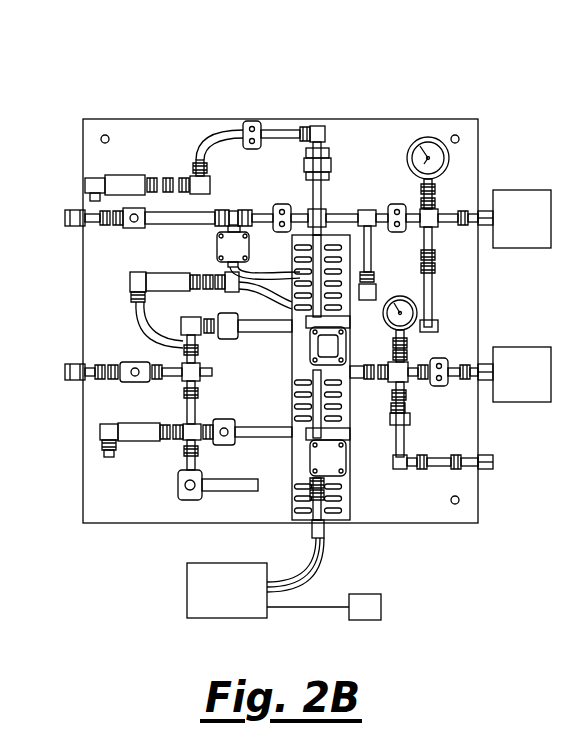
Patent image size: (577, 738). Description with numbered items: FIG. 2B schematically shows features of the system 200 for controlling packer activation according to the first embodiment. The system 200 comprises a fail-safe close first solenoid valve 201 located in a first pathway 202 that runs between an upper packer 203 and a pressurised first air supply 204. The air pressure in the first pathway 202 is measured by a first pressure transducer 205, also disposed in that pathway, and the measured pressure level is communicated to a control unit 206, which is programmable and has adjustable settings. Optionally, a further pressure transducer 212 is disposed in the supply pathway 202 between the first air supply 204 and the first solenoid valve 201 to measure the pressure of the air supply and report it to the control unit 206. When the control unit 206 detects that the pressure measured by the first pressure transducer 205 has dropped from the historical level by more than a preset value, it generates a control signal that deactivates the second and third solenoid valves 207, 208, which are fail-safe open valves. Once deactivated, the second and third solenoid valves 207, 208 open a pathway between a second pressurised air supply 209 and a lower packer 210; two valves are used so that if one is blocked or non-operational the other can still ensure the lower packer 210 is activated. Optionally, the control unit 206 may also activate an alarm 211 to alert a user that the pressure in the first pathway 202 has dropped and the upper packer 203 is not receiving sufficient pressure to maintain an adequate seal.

The system 200 is at (428, 91).
The first solenoid valve 201 is at (232, 230).
The first pathway 202 is at (280, 222).
The upper packer 203 is at (526, 205).
The first air supply 204 is at (66, 220).
The first pressure transducer 205 is at (130, 281).
The control unit 206 is at (207, 593).
The second solenoid valve 207 is at (340, 345).
The third solenoid valve 208 is at (335, 457).
The second pressurised air supply 209 is at (130, 375).
The lower packer 210 is at (520, 388).
The alarm 211 is at (372, 601).
The further pressure transducer 212 is at (125, 183).